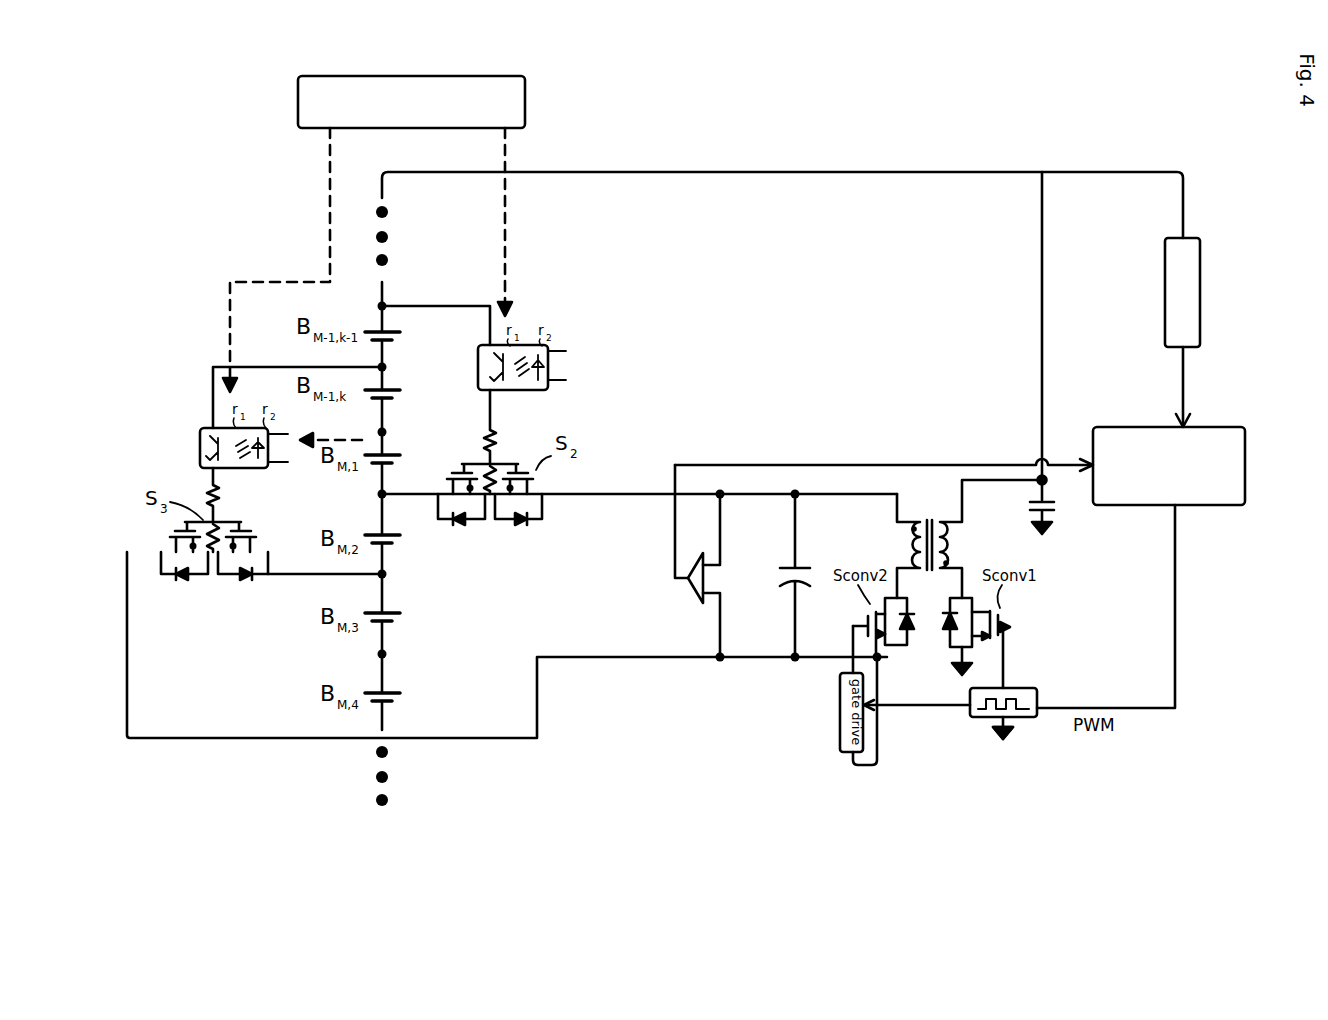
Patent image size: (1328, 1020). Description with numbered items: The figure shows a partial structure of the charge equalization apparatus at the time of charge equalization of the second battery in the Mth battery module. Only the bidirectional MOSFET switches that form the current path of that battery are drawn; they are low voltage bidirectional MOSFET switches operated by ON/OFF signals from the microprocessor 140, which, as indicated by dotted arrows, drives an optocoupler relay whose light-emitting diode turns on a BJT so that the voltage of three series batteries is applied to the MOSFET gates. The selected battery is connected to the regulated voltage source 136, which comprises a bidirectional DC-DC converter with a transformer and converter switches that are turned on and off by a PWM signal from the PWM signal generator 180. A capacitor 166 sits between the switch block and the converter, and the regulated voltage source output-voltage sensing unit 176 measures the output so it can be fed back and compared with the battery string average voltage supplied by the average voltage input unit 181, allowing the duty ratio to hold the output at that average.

The microprocessor 140 is at (430, 75).
The average voltage input unit 181 is at (1164, 285).
The Pulse Width Modulation (PWM) signal generator 180 is at (1163, 427).
The regulated voltage source 136 is at (936, 499).
The regulated voltage source output-voltage sensing unit 176 is at (692, 606).
The capacitor 166 is at (773, 590).